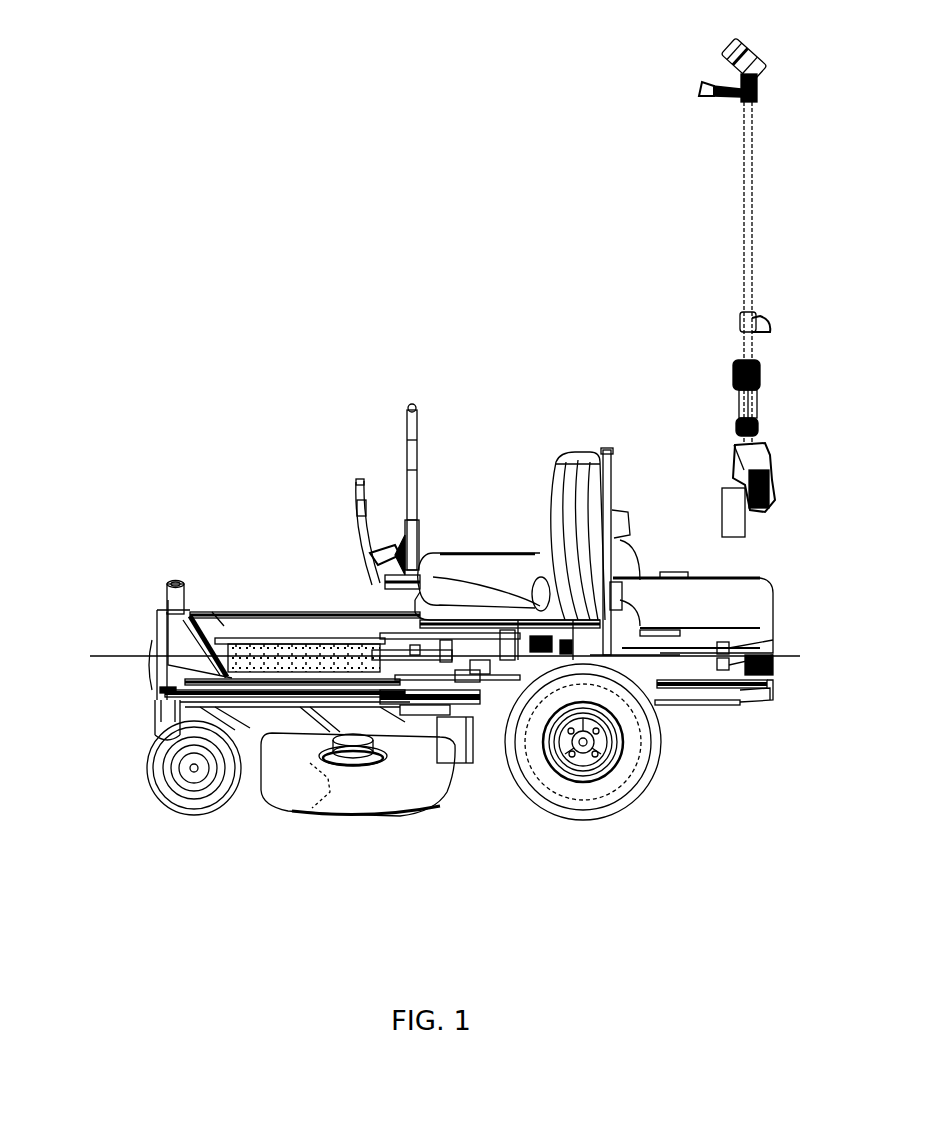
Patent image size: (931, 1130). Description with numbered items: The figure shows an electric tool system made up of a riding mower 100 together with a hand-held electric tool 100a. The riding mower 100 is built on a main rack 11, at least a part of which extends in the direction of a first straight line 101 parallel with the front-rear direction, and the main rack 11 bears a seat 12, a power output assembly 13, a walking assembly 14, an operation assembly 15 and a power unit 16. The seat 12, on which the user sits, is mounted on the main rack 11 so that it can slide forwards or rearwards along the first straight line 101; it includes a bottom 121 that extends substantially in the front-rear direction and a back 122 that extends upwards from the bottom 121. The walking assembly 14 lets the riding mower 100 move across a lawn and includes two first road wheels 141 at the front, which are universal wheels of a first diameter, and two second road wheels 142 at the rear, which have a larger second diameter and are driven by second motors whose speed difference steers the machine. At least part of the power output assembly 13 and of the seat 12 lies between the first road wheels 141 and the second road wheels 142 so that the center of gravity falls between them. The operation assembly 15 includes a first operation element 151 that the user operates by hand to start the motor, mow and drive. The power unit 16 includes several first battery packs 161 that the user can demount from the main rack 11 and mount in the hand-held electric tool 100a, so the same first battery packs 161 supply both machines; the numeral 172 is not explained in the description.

The riding mower 100 is at (242, 466).
The hand-held electric tool 100a is at (748, 225).
The first straight line 101 is at (113, 660).
The main rack 11 is at (290, 612).
The seat 12 is at (510, 499).
The bottom 121 is at (476, 552).
The back 122 is at (560, 490).
The power output assembly 13 is at (333, 805).
The walking assembly 14 is at (377, 807).
The first road wheels 141 is at (148, 790).
The second road wheels 142 is at (564, 779).
The operation assembly 15 is at (406, 445).
The first operation element 151 is at (345, 522).
The power unit 16 is at (705, 597).
The first battery packs 161 is at (724, 490).
The caster post 172 is at (165, 625).